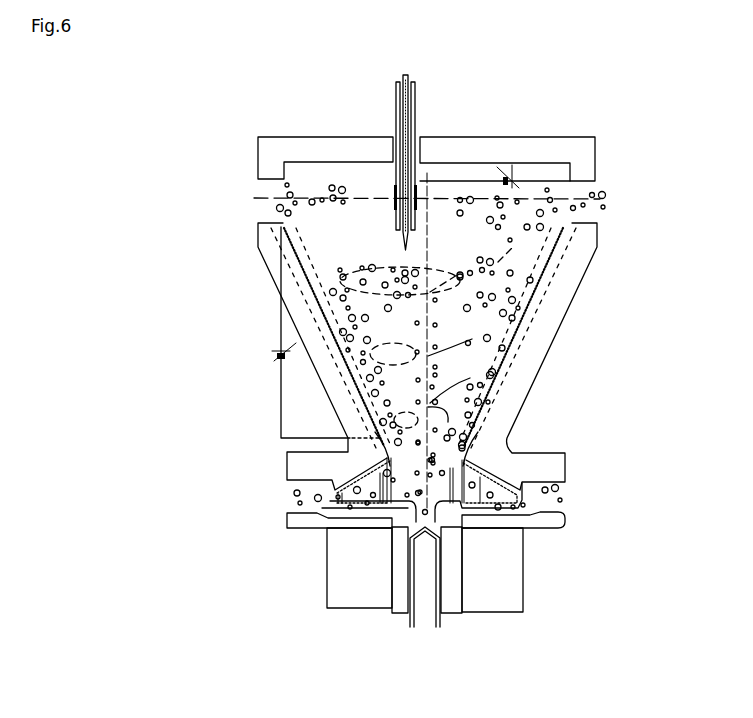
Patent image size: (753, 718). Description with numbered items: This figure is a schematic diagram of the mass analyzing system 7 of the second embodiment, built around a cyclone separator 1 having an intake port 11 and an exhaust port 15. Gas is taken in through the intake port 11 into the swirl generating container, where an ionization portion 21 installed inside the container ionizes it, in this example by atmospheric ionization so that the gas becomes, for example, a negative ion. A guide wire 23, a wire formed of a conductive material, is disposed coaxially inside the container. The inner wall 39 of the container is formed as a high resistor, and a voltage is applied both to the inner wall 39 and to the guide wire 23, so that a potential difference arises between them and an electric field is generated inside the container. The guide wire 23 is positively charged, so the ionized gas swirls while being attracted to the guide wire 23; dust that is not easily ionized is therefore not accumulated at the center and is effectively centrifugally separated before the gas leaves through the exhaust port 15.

The mass analyzing system 7 is at (487, 106).
The ionization portion 21 is at (397, 226).
The intake port 11 is at (592, 188).
The cyclone separator 1 is at (430, 312).
The inner wall 39 is at (537, 327).
The guide wire 23 is at (427, 317).
The exhaust port 15 is at (292, 500).